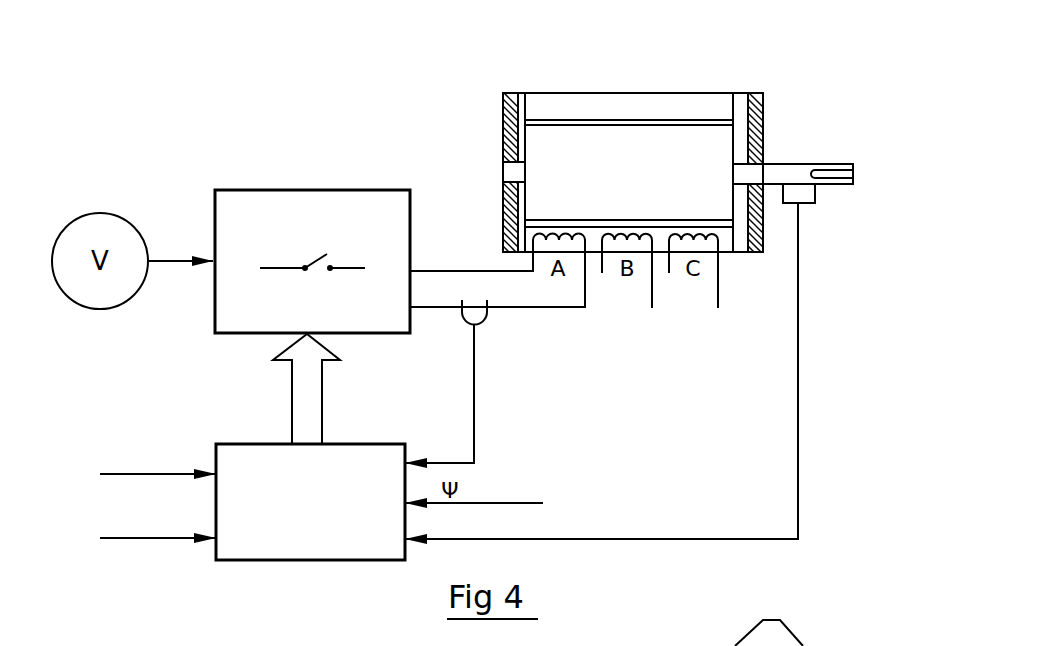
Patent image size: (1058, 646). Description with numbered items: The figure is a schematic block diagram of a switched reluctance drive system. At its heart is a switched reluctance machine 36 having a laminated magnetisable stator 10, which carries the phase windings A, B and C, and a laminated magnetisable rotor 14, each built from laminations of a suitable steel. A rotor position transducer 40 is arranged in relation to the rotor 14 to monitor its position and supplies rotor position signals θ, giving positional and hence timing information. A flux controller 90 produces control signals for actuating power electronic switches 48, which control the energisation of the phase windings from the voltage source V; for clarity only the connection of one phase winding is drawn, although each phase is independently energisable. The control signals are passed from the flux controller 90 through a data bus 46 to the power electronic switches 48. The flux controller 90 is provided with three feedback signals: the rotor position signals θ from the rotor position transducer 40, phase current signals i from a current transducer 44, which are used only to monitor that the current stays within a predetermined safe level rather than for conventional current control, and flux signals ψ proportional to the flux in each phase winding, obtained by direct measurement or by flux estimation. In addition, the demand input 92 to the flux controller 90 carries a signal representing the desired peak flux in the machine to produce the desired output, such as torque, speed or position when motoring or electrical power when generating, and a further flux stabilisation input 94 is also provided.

The stator 10 is at (557, 92).
The rotor 14 is at (695, 148).
The switched reluctance machine 36 is at (732, 83).
The rotor position transducer 40 is at (800, 197).
The current transducer 44 is at (455, 314).
The data bus 46 is at (322, 395).
The power electronic switches 48 is at (320, 189).
The flux controller 90 is at (255, 443).
The demand input 92 is at (180, 540).
The flux stabilisation input 94 is at (165, 473).